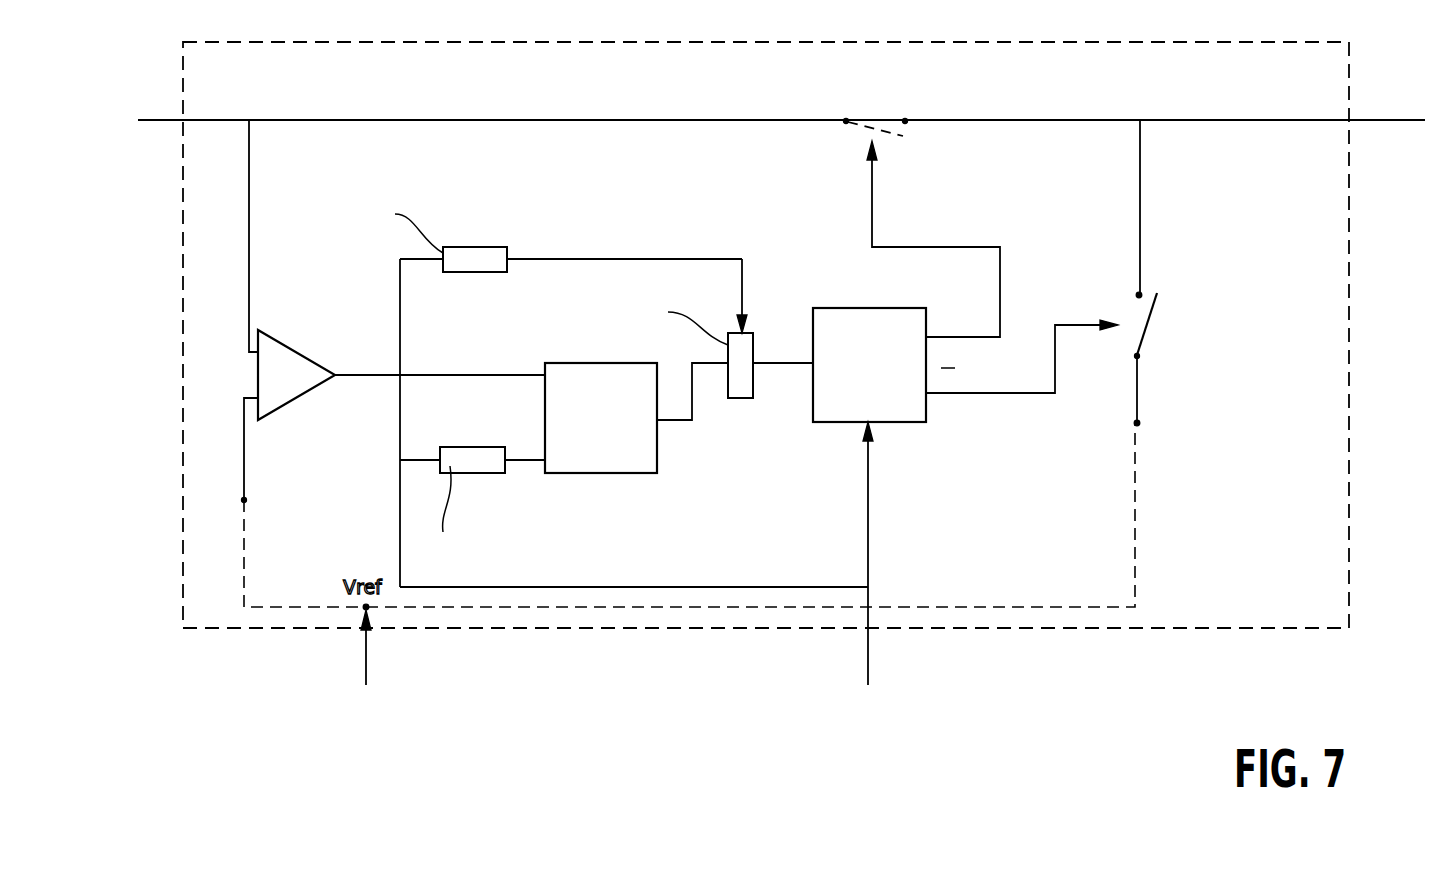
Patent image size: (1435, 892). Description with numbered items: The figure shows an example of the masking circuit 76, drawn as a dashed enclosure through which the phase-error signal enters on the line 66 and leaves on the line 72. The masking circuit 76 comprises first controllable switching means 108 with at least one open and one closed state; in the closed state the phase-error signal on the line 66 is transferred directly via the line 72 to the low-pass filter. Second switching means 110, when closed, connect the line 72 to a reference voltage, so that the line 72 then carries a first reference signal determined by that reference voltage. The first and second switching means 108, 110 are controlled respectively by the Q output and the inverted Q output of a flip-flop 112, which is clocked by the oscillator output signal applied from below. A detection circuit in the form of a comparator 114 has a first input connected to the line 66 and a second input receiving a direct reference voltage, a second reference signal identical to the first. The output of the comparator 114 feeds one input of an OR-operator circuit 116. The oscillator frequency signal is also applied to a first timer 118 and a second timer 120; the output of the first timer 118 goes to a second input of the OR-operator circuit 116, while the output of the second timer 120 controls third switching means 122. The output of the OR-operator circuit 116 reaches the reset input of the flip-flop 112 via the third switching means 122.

The line 66 is at (158, 120).
The line 72 is at (1387, 123).
The masking circuit 76 is at (1327, 617).
The first controllable switching means 108 is at (962, 160).
The second switching means 110 is at (1219, 351).
The flip-flop 112 is at (965, 429).
The comparator 114 is at (312, 393).
The OR-operator circuit 116 is at (601, 418).
The first timer 118 is at (470, 473).
The second timer 120 is at (480, 247).
The third switching means 122 is at (753, 383).